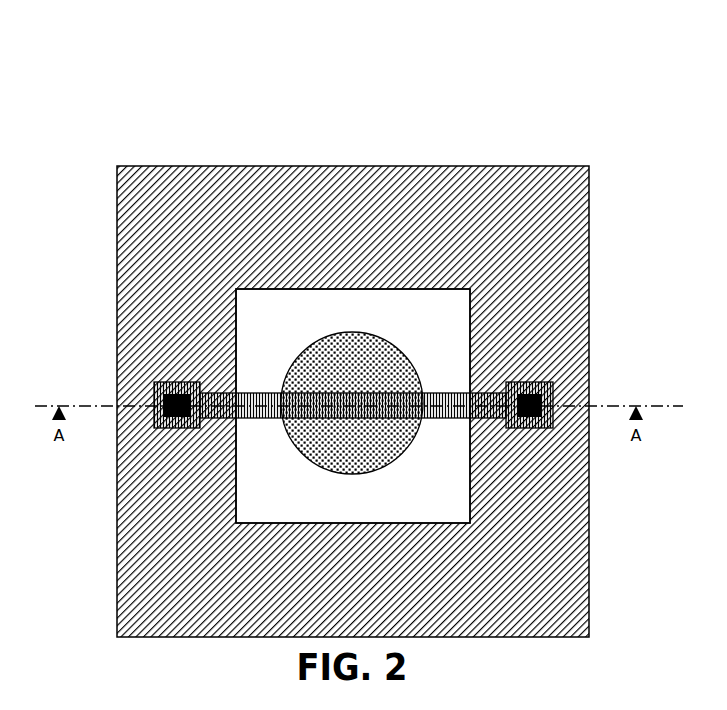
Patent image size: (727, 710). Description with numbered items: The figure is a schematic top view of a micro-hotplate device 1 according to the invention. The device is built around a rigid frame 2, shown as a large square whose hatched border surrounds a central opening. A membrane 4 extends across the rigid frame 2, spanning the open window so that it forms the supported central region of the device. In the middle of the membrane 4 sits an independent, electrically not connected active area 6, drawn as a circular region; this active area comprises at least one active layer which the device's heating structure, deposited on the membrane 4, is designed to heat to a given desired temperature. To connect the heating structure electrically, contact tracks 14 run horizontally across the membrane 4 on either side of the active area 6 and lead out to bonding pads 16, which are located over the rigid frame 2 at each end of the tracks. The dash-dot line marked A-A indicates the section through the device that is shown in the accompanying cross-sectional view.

The micro-hotplate device 1 is at (346, 112).
The rigid frame 2 is at (152, 225).
The membrane 4 is at (294, 330).
The active area 6 is at (378, 383).
The contact tracks 14 is at (445, 405).
The bonding pads 16 is at (542, 388).